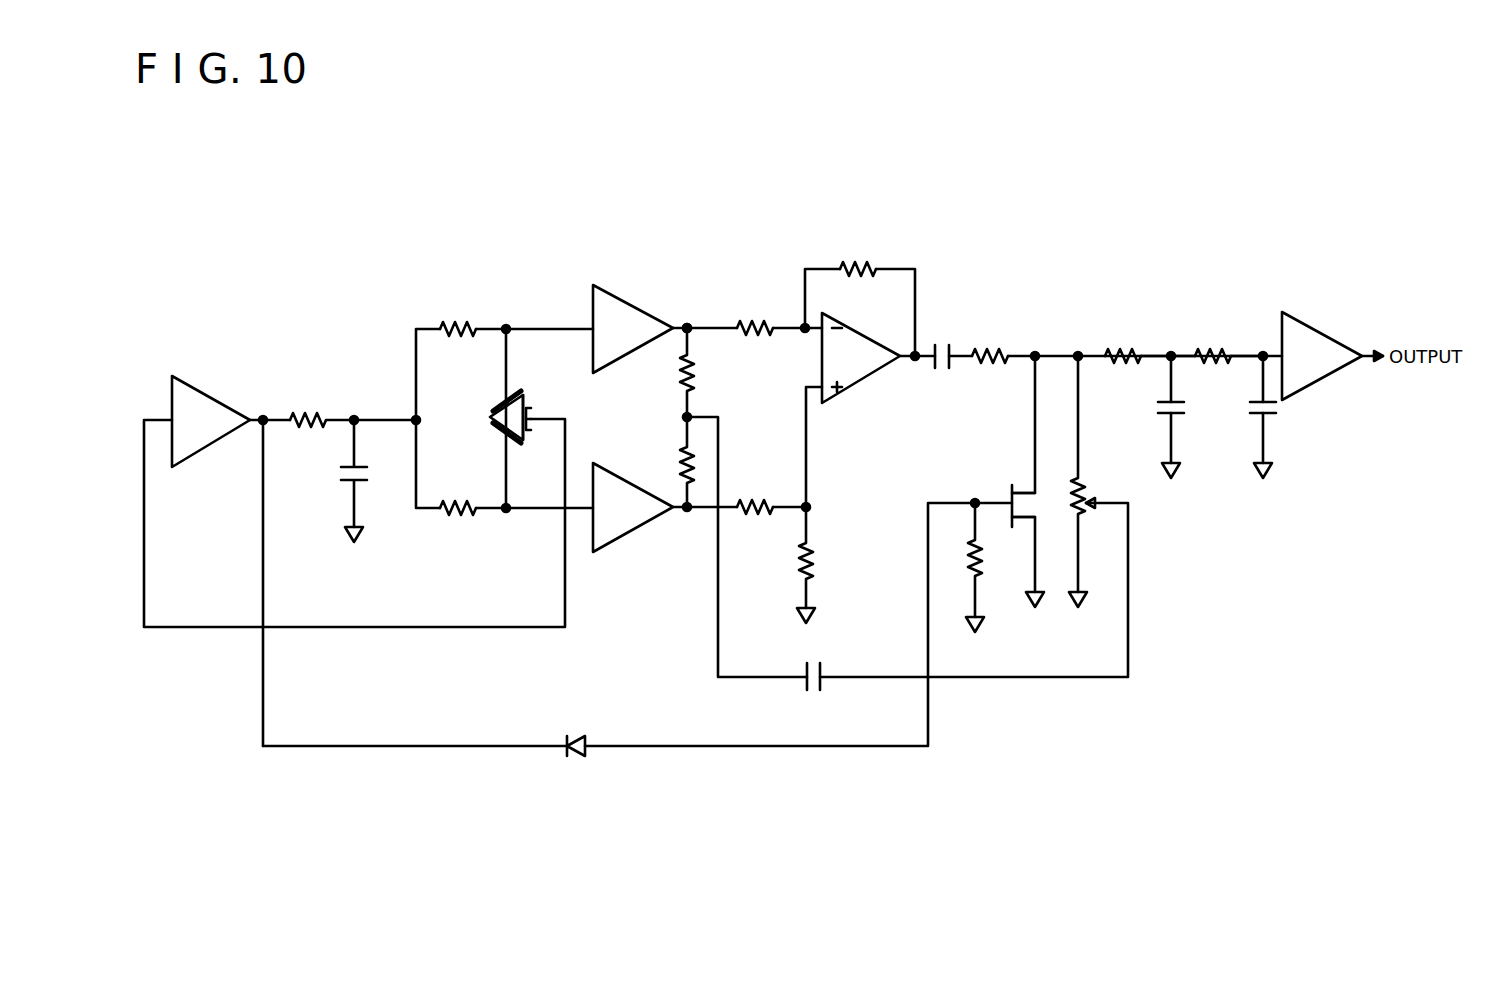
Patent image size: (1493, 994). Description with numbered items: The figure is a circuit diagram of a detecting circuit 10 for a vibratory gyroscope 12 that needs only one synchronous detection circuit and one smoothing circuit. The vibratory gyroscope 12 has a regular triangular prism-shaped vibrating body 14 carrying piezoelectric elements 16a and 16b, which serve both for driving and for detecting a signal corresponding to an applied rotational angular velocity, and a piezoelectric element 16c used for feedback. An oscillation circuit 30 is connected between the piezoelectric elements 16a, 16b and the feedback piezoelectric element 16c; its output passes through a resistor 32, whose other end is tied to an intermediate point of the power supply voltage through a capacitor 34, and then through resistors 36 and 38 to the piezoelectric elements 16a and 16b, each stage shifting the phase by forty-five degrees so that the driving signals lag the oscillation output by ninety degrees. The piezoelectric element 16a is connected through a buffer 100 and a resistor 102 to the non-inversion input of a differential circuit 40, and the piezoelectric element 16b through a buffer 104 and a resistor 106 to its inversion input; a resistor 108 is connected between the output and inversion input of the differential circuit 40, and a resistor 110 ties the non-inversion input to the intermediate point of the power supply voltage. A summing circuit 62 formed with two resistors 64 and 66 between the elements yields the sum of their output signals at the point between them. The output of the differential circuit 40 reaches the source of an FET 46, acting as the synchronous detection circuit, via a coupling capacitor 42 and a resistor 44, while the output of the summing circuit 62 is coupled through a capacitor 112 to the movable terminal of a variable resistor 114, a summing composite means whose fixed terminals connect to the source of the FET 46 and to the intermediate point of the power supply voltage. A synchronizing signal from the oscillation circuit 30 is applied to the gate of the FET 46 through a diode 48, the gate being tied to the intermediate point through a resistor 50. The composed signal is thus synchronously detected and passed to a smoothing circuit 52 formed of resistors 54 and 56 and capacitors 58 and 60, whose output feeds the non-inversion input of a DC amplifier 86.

The detecting circuit 10 is at (258, 222).
The vibratory gyroscope 12 is at (476, 426).
The vibrating body 14 is at (526, 434).
The piezoelectric element 16a is at (500, 432).
The piezoelectric element 16b is at (497, 400).
The piezoelectric element 16c is at (530, 405).
The oscillation circuit 30 is at (208, 403).
The resistor 32 is at (306, 412).
The capacitor 34 is at (348, 486).
The resistor 36 is at (458, 514).
The resistor 38 is at (462, 322).
The differential circuit 40 is at (865, 380).
The coupling capacitor 42 is at (950, 343).
The resistor 44 is at (1003, 344).
The FET 46 is at (1010, 498).
The diode 48 is at (567, 752).
The resistor 50 is at (976, 560).
The smoothing circuit 52 is at (1171, 319).
The resistor 54 is at (1122, 344).
The resistor 56 is at (1230, 344).
The capacitor 58 is at (1178, 420).
The capacitor 60 is at (1268, 420).
The summing circuit 62 is at (692, 308).
The resistor 64 is at (683, 364).
The resistor 66 is at (683, 458).
The DC amplifier 86 is at (1310, 335).
The buffer 100 is at (622, 540).
The resistor 102 is at (764, 512).
The buffer 104 is at (612, 305).
The resistor 106 is at (756, 324).
The resistor 108 is at (858, 265).
The resistor 110 is at (810, 548).
The capacitor 112 is at (804, 686).
The variable resistor 114 is at (1082, 490).